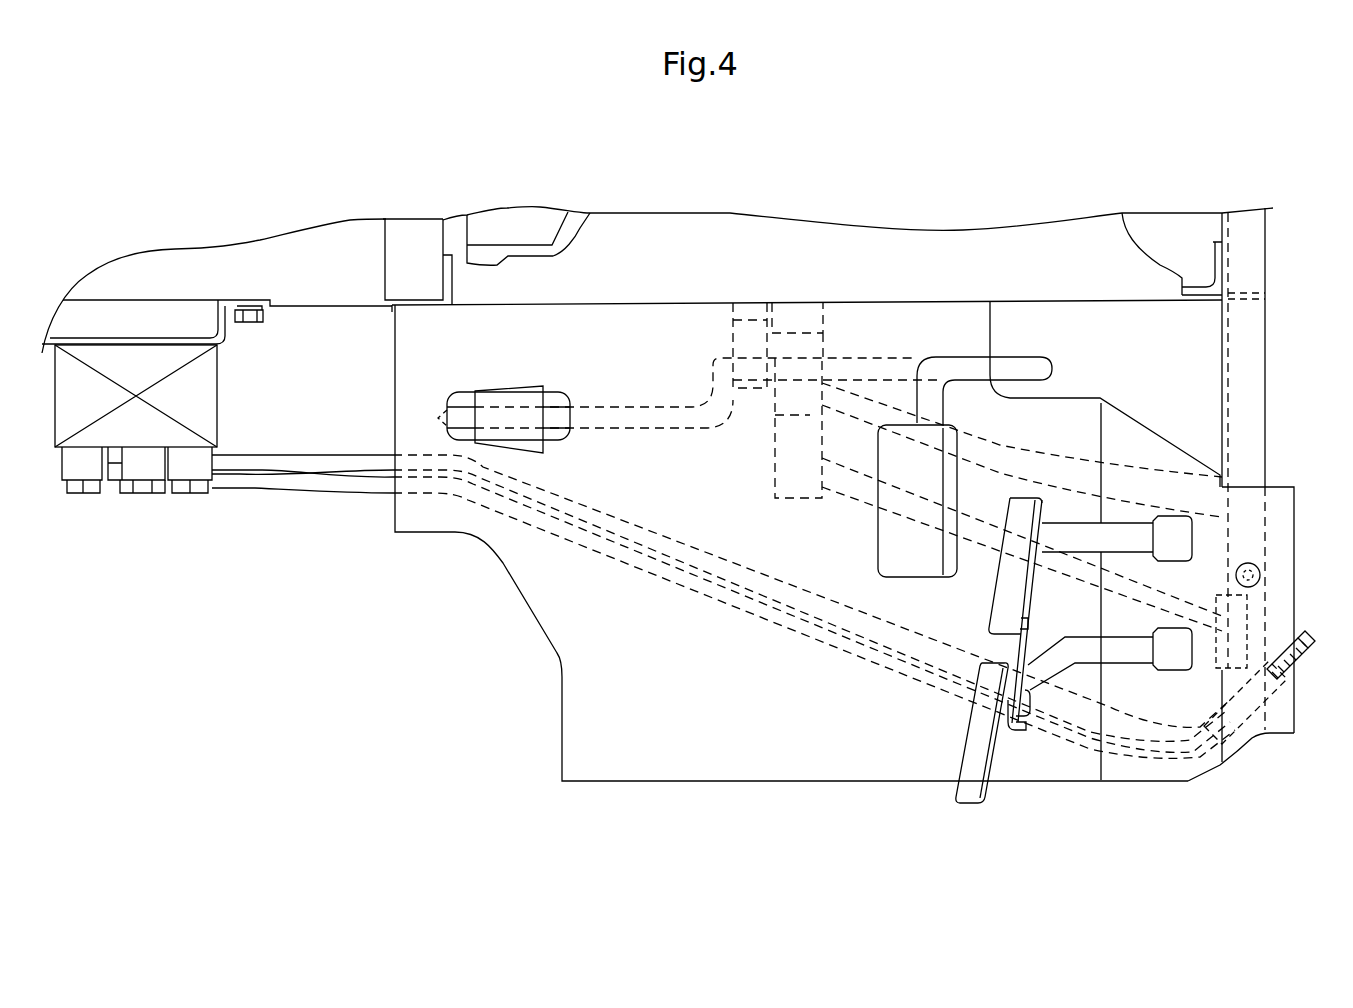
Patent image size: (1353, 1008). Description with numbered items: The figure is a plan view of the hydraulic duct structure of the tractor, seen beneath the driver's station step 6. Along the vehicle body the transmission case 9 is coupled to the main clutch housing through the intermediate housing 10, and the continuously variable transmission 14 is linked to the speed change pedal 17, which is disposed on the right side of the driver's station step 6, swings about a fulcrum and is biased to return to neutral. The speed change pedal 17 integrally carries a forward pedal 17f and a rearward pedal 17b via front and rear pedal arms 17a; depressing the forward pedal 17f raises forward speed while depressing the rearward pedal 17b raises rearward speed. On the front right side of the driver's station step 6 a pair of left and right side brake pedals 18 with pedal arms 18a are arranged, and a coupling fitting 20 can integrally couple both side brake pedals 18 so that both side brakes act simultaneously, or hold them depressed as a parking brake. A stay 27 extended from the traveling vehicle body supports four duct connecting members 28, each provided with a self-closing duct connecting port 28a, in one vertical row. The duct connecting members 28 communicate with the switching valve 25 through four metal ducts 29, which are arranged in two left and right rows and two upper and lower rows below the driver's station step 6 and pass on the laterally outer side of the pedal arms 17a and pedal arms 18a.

The driver's station step 6 is at (791, 786).
The transmission case 9 is at (318, 296).
The intermediate housing 10 is at (838, 228).
The continuously variable transmission 14 is at (522, 215).
The speed change pedal 17 is at (1047, 367).
The pedal arms 17a is at (620, 405).
The rearward pedal 17b is at (500, 400).
The forward pedal 17f is at (877, 532).
The side brake pedals 18 is at (995, 605).
The pedal arms 18a is at (1125, 527).
The coupling fitting 20 is at (1028, 643).
The switching valve 25 is at (215, 400).
The stay 27 is at (1268, 735).
The duct connecting members 28 is at (1252, 738).
The duct connecting ports 28a is at (1303, 660).
The metal ducts 29 is at (298, 490).